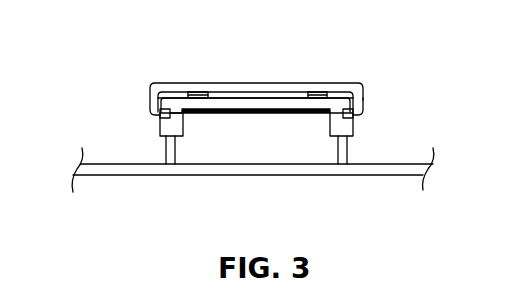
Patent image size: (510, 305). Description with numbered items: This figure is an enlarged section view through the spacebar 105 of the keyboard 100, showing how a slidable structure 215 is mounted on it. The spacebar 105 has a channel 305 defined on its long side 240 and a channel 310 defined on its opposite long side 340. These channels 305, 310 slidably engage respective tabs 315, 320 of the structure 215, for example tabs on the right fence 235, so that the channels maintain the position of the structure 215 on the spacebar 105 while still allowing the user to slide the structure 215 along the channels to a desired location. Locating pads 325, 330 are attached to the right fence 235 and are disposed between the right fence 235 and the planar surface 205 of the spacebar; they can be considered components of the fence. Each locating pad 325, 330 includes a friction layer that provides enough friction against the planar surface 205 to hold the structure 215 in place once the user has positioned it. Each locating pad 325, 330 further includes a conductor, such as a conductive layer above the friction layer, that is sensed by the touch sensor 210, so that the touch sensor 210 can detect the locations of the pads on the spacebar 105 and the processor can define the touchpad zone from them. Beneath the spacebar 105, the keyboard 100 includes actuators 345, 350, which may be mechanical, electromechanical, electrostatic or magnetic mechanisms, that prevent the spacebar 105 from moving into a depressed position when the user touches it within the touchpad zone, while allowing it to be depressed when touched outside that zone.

The keyboard 100 is at (126, 176).
The spacebar 105 is at (162, 98).
The planar surface 205 is at (250, 93).
The touch sensor 210 is at (217, 96).
The structure 215 is at (143, 78).
The right fence 235 is at (348, 84).
The long side 240 is at (160, 132).
The channel 305 is at (176, 115).
The channel 310 is at (332, 114).
The tab 315 is at (160, 116).
The tab 320 is at (350, 122).
The locating pad 325 is at (197, 92).
The locating pad 330 is at (318, 95).
The long side 340 is at (354, 130).
The actuator 345 is at (173, 152).
The actuator 350 is at (343, 150).